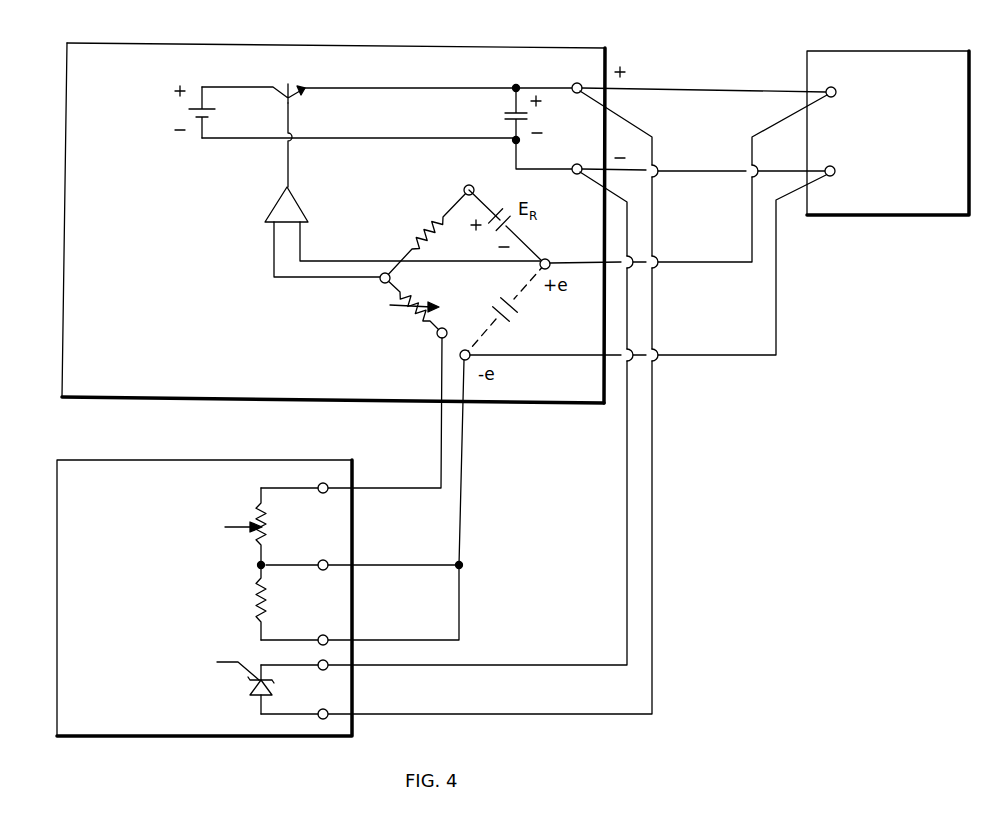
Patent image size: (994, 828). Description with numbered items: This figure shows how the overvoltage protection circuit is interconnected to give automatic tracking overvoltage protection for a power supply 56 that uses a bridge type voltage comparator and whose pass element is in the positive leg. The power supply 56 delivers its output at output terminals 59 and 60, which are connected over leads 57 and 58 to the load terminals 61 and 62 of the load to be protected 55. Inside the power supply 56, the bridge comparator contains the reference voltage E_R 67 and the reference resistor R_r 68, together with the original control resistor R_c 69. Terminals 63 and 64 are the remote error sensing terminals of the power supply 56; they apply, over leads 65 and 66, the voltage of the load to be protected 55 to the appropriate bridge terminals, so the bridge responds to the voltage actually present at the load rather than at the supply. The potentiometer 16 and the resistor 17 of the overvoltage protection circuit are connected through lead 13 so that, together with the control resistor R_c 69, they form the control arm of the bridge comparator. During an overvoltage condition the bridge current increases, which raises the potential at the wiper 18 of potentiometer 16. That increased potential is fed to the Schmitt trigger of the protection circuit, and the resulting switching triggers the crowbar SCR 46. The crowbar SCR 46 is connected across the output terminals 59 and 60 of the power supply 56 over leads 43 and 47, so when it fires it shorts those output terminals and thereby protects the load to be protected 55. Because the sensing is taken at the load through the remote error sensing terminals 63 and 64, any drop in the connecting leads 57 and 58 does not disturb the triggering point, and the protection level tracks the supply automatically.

The lead 13 is at (461, 510).
The potentiometer 16 is at (257, 517).
The resistor 17 is at (255, 598).
The wiper 18 is at (251, 530).
The lead 43 is at (627, 522).
The crowbar SCR 46 is at (267, 680).
The lead 47 is at (653, 521).
The load to be protected 55 is at (862, 217).
The power supply 56 is at (62, 310).
The lead 57 is at (688, 171).
The lead 58 is at (700, 88).
The output terminal 59 is at (581, 165).
The output terminal 60 is at (579, 83).
The load terminal 61 is at (829, 178).
The load terminal 62 is at (832, 86).
The remote error sensing terminal 63 is at (549, 259).
The remote error sensing terminal 64 is at (468, 360).
The lead 65 is at (685, 262).
The lead 66 is at (685, 355).
The reference voltage 67 is at (505, 213).
The reference resistor 68 is at (418, 228).
The control resistor 69 is at (400, 291).